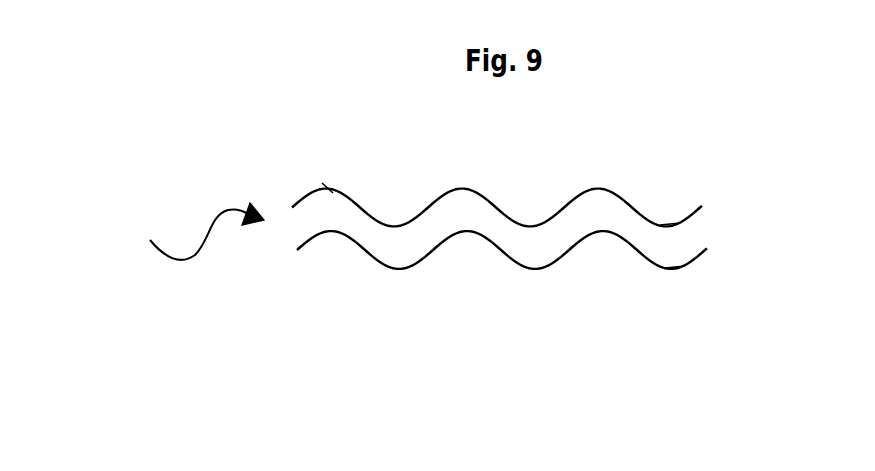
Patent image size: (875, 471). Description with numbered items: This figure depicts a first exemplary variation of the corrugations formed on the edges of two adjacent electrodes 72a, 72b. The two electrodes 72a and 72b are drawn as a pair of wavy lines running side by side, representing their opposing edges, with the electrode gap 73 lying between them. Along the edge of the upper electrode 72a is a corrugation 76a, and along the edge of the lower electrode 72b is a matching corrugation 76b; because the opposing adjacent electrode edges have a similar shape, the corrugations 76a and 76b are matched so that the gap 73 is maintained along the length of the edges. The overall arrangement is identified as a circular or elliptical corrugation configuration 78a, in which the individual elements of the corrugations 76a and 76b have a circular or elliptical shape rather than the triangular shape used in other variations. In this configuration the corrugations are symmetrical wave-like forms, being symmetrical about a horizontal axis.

The electrode 72a is at (497, 188).
The electrode 72b is at (502, 274).
The gap 73 is at (331, 207).
The corrugation 76a is at (630, 207).
The corrugation 76b is at (650, 263).
The circular or elliptical corrugation configuration 78a is at (192, 231).